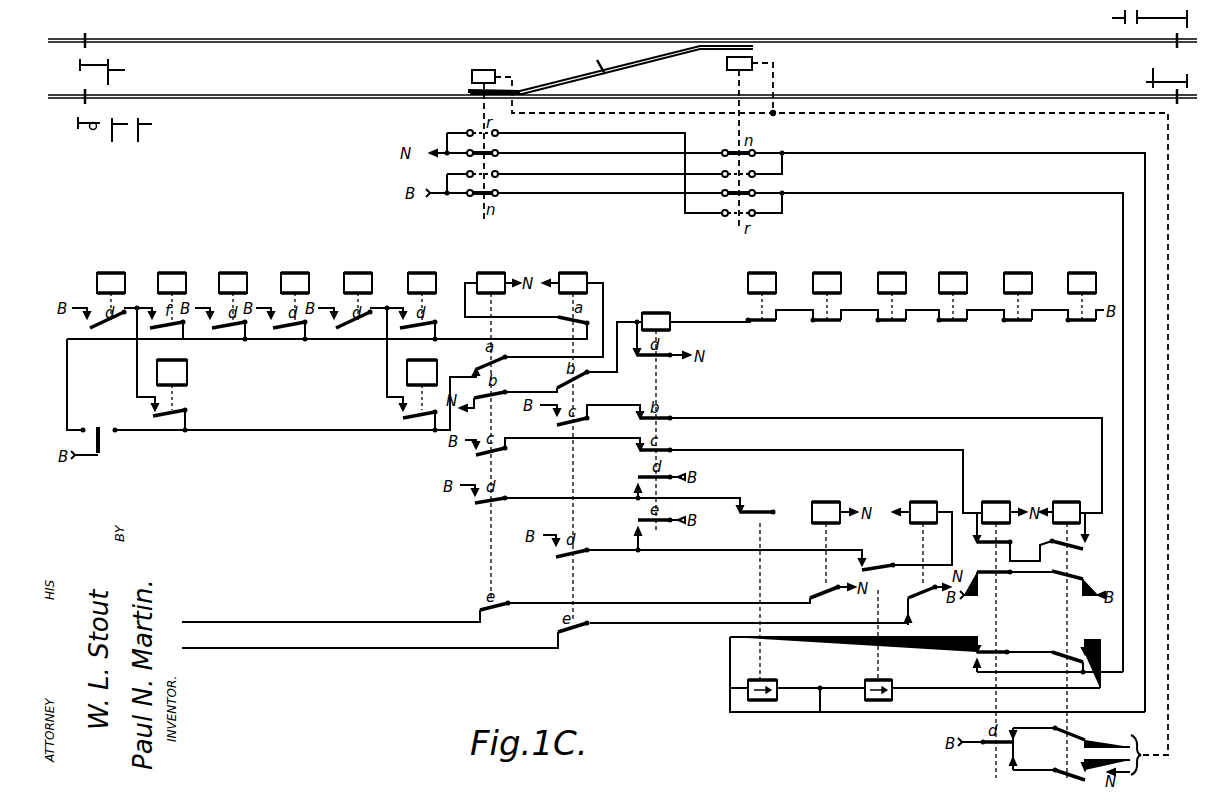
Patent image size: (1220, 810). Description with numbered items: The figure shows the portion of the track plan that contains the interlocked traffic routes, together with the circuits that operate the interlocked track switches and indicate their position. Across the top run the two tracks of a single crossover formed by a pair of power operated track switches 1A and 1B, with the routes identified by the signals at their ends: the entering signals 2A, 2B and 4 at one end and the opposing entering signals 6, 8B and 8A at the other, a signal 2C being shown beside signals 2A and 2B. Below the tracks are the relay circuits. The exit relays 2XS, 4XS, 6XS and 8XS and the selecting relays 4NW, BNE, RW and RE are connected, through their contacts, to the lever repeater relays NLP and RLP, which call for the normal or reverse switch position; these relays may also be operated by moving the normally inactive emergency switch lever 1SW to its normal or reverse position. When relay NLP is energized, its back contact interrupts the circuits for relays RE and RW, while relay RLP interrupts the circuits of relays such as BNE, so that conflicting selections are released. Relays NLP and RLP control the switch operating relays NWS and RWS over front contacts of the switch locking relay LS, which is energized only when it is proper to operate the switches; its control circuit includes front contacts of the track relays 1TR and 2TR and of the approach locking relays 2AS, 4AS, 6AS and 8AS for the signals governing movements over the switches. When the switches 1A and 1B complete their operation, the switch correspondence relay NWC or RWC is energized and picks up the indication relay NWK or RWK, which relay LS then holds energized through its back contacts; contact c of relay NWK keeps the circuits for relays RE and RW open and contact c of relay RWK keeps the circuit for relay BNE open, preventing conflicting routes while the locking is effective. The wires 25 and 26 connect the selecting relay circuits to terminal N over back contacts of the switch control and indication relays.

The power operated track switch 1A is at (483, 67).
The power operated track switch 1B is at (723, 66).
The signal 4 is at (102, 72).
The signal 6 is at (1172, 81).
The signal 8A is at (1106, 17).
The signal 8B is at (1162, 18).
The signal 2A is at (139, 142).
The signal 2B is at (113, 142).
The signal 2C is at (90, 130).
The wire 25 is at (331, 613).
The wire 26 is at (370, 639).
The emergency switch lever 1SW is at (90, 428).
The exit relay 2XS is at (108, 287).
The relay 4NW is at (168, 287).
The exit relay 4XS is at (230, 287).
The exit relay 6XS is at (292, 287).
The exit relay 8XS is at (355, 287).
The selecting relay BNE is at (418, 287).
The selecting relay RW is at (170, 385).
The selecting relay RE is at (420, 385).
The lever repeater relay NLP is at (487, 426).
The lever repeater relay RLP is at (570, 436).
The switch locking relay LS is at (655, 412).
The track relay 1TR is at (759, 286).
The track relay 2TR is at (823, 286).
The approach locking relay 2AS is at (889, 286).
The approach locking relay 4AS is at (950, 286).
The approach locking relay 6AS is at (1014, 286).
The approach locking relay 8AS is at (1078, 286).
The switch correspondence relay NWC is at (758, 590).
The switch correspondence relay RWC is at (875, 616).
The indication relay NWK is at (822, 540).
The indication relay RWK is at (920, 540).
The switch operating relay NWS is at (993, 630).
The switch operating relay RWS is at (1066, 631).